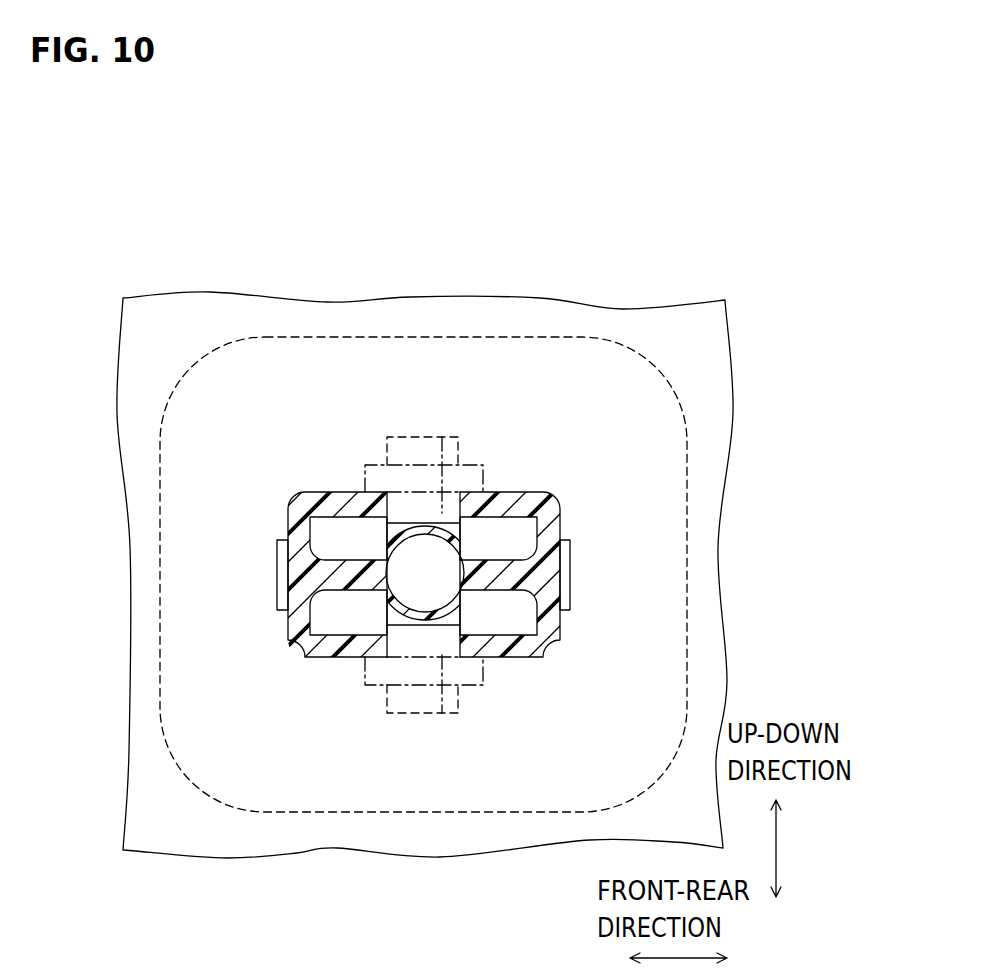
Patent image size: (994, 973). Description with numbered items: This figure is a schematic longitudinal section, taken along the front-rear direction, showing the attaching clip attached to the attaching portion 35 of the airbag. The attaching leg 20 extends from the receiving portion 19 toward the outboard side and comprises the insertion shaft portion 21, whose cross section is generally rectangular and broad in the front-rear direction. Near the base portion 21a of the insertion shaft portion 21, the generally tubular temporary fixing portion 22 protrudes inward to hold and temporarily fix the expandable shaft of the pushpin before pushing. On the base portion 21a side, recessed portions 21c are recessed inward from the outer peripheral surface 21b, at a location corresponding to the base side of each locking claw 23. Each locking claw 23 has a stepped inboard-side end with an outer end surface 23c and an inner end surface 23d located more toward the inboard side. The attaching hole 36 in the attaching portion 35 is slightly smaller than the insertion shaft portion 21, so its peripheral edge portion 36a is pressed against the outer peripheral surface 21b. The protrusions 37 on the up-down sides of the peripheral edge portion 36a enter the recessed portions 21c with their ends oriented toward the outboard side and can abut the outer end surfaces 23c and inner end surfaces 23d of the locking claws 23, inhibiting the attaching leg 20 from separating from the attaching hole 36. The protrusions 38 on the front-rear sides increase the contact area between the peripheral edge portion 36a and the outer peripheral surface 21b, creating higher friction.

The receiving portion 19 is at (687, 520).
The attaching leg 20 is at (287, 467).
The insertion shaft portion 21 is at (519, 481).
The base portion 21a is at (302, 657).
The outer peripheral surface 21b is at (560, 646).
The recessed portion 21c is at (403, 507).
The temporary fixing portion 22 is at (432, 563).
The locking claw 23 is at (436, 577).
The outer end surface 23c is at (442, 437).
The inner end surface 23d is at (420, 507).
The attaching portion 35 is at (667, 276).
The attaching hole 36 is at (516, 656).
The peripheral edge portion 36a is at (563, 515).
The protrusion 37 is at (448, 508).
The protrusion 38 is at (283, 577).